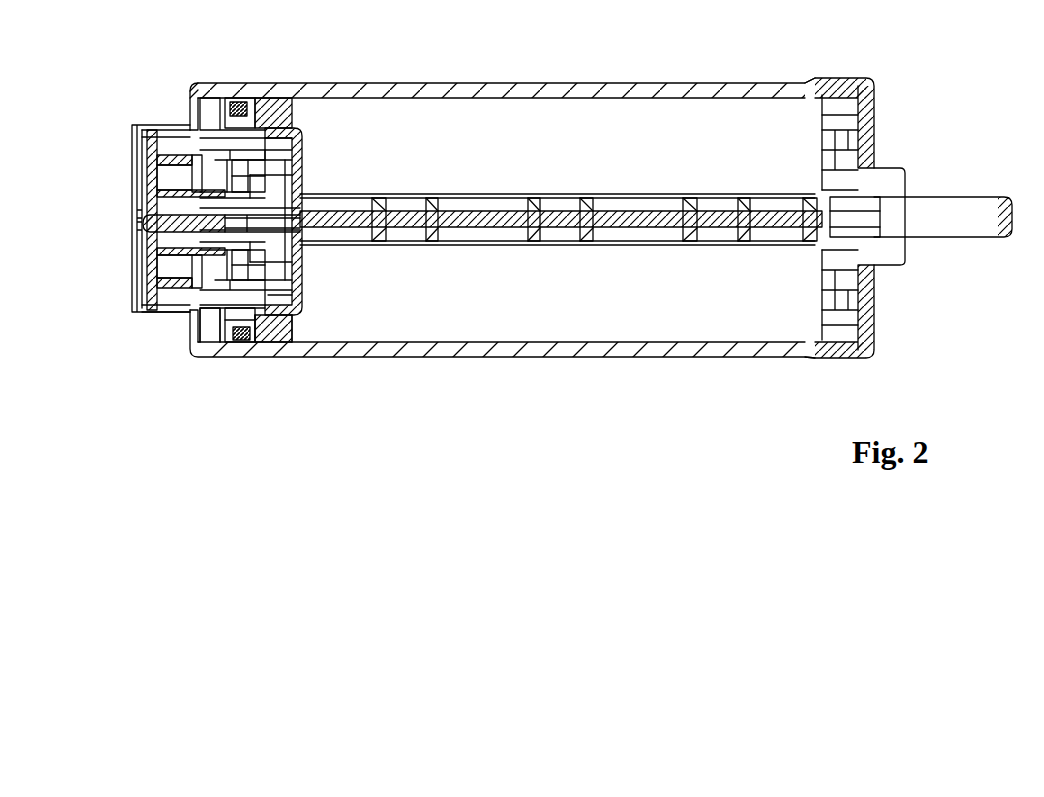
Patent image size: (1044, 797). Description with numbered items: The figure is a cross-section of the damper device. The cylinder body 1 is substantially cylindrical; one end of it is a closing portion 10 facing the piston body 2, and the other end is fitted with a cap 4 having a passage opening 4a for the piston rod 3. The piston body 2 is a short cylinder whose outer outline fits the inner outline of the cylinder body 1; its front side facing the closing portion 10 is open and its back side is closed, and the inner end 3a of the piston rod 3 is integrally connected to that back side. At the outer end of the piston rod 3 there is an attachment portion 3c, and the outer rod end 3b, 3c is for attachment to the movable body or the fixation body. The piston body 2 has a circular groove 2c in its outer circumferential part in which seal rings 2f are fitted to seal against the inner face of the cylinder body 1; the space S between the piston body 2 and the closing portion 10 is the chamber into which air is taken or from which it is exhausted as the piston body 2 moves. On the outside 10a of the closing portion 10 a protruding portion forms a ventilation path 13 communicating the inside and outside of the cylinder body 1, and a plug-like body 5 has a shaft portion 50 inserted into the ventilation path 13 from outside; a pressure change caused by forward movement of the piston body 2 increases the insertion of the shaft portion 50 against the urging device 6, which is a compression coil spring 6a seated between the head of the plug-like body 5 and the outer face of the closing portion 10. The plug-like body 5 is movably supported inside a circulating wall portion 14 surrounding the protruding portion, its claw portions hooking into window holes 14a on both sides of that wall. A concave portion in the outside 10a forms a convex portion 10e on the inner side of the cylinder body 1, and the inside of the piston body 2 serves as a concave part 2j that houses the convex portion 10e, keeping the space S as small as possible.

The cylinder body 1 is at (546, 82).
The piston body 2 is at (289, 155).
The circular groove 2c is at (257, 337).
The seal ring 2f is at (237, 343).
The concave part 2j is at (285, 282).
The piston rod 3 is at (597, 207).
The inner end of piston rod 3a is at (317, 253).
The shaft output end 3b is at (924, 187).
The attachment portion 3c is at (855, 219).
The cap 4 is at (877, 317).
The passage opening 4a is at (857, 223).
The plug-like body 5 is at (150, 167).
The urging device 6 is at (216, 179).
The compression coil spring 6a is at (241, 333).
The closing portion 10 is at (192, 97).
The outside of closing portion 10a is at (190, 333).
The convex portion 10e is at (275, 162).
The ventilation path 13 is at (267, 190).
The circulating wall portion 14 is at (132, 310).
The window hole 14a is at (165, 137).
The shaft portion 50 is at (147, 243).
The space S is at (210, 333).